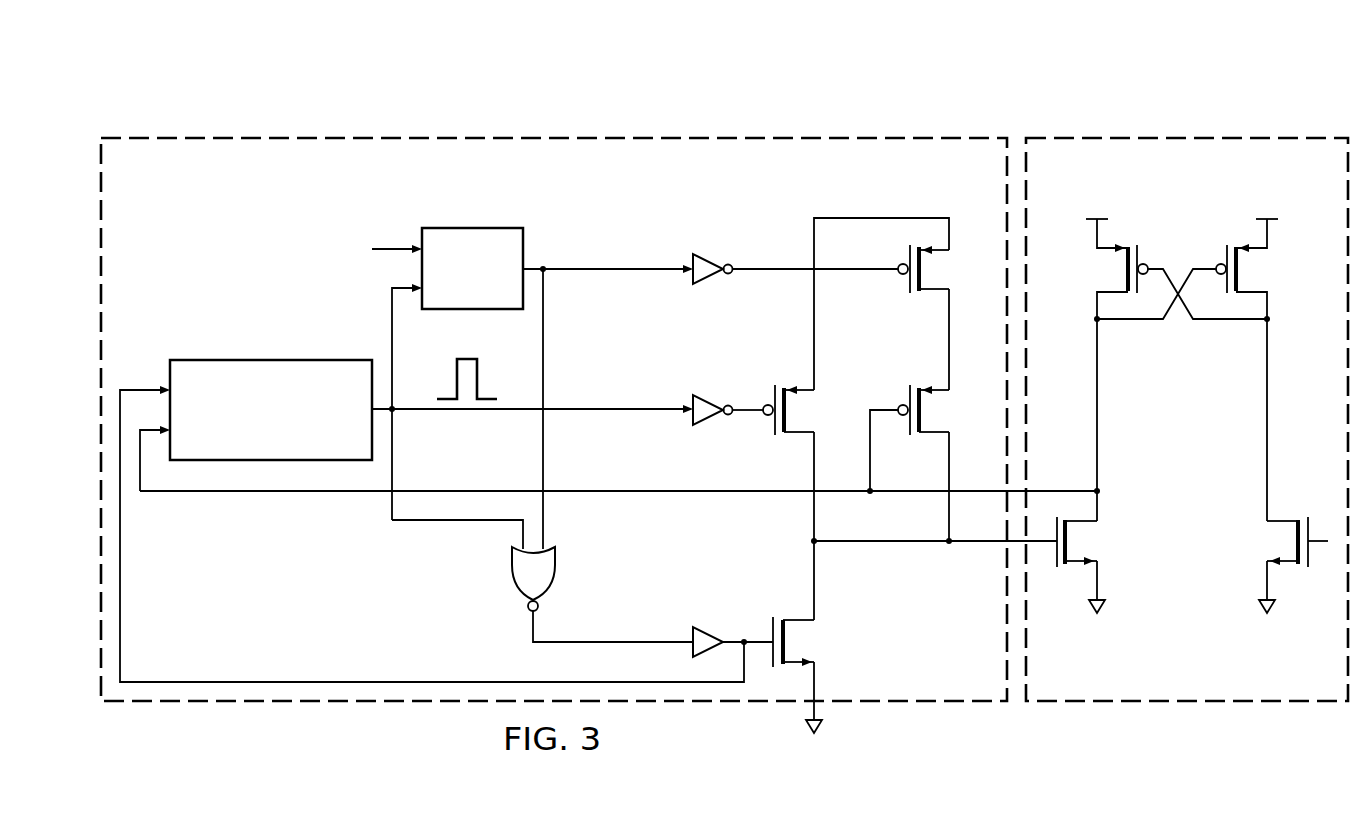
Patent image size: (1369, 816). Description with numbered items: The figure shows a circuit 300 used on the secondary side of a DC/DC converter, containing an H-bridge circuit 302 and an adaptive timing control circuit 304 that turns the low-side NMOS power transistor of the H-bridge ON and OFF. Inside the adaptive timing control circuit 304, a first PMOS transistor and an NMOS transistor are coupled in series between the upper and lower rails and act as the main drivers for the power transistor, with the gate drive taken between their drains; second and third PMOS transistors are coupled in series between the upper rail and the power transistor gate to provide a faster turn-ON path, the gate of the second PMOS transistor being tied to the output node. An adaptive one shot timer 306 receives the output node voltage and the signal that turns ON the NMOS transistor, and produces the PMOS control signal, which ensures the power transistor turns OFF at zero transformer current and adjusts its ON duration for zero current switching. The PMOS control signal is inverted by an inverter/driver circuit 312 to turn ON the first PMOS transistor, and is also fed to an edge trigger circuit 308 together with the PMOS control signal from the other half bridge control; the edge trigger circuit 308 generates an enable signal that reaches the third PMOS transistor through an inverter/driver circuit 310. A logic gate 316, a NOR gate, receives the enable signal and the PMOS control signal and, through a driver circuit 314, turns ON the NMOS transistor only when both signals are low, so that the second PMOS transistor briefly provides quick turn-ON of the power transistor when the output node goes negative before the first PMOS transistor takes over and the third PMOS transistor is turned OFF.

The circuit 300 is at (285, 77).
The H-bridge circuit 302 is at (1229, 130).
The adaptive timing control circuit 304 is at (466, 130).
The adaptive one shot timer 306 is at (230, 358).
The edge trigger circuit 308 is at (471, 228).
The inverter/driver circuit 310 is at (726, 245).
The inverter/driver circuit 312 is at (712, 397).
The driver circuit 314 is at (712, 629).
The logic gate 316 is at (512, 580).